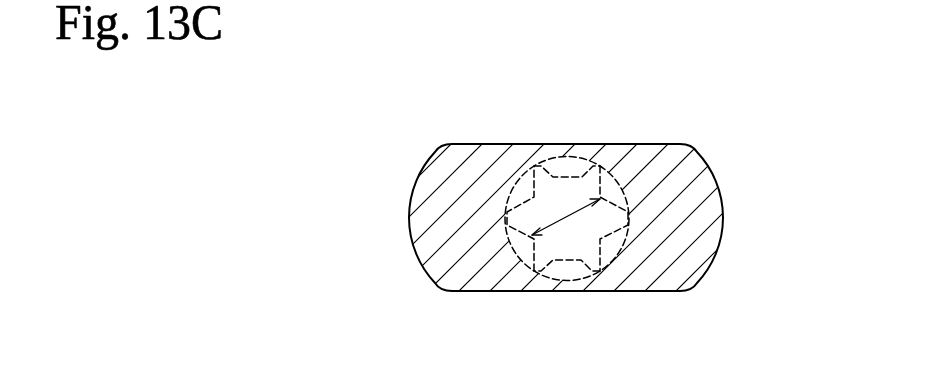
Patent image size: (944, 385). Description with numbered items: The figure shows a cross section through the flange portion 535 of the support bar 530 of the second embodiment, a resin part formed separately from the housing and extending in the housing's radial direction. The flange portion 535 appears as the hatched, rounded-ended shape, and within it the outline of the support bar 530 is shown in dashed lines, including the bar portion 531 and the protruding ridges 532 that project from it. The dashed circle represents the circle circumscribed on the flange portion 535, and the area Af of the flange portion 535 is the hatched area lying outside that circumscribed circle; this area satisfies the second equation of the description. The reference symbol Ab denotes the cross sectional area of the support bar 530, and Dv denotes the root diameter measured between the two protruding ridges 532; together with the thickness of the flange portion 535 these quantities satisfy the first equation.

The flange portion 535 is at (461, 144).
The support bar 530 is at (603, 197).
The bar portion 531 is at (508, 213).
The protruding ridge 532 is at (593, 164).
The area of the flange portion Af is at (422, 184).
The cross sectional area of the support bar Ab is at (557, 178).
The root diameter Dv is at (566, 222).